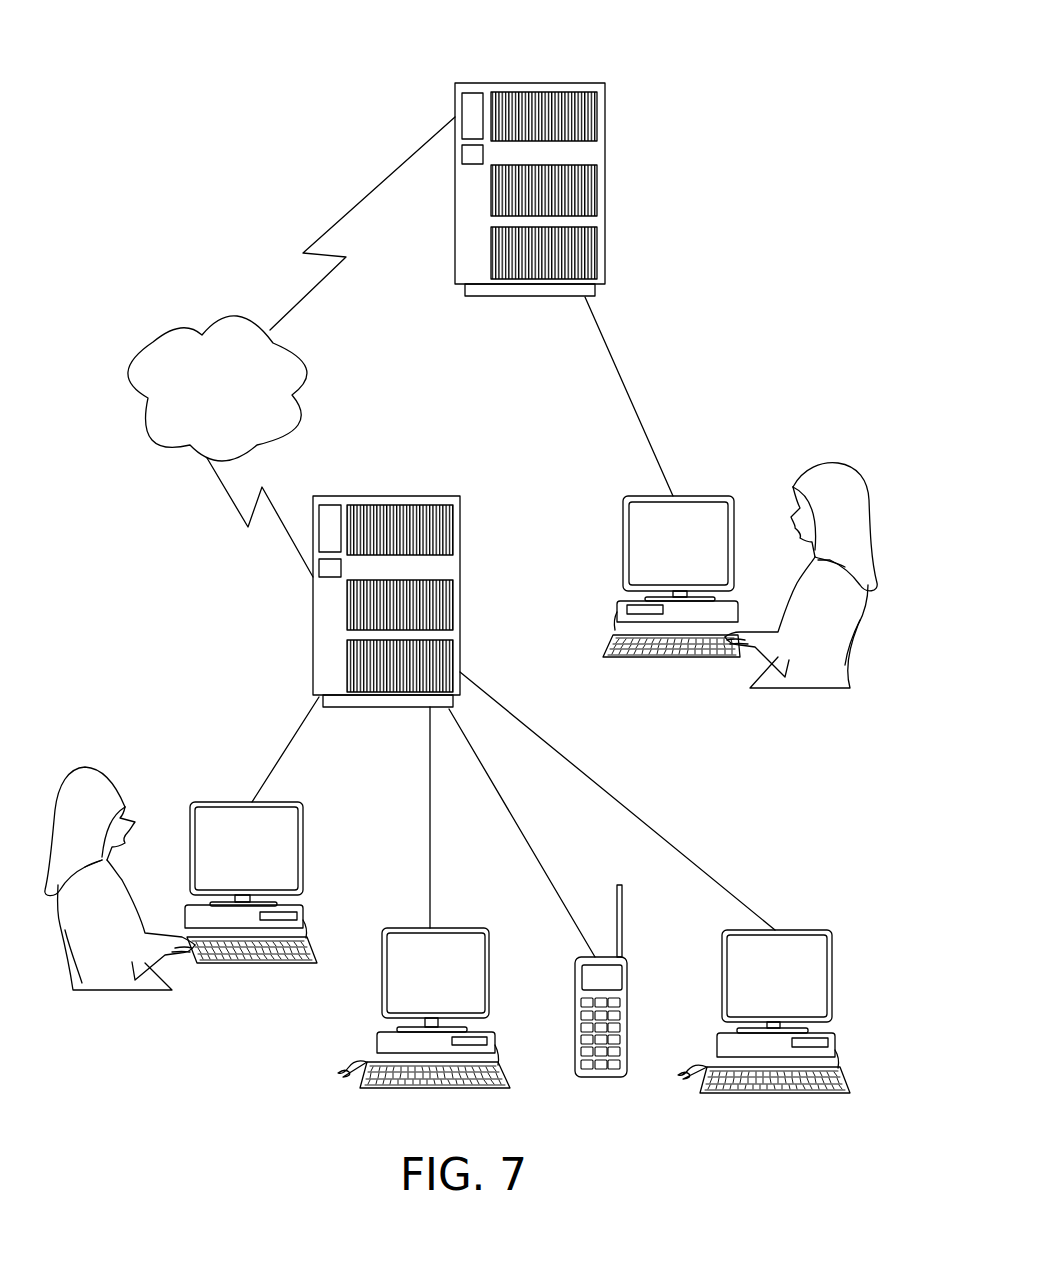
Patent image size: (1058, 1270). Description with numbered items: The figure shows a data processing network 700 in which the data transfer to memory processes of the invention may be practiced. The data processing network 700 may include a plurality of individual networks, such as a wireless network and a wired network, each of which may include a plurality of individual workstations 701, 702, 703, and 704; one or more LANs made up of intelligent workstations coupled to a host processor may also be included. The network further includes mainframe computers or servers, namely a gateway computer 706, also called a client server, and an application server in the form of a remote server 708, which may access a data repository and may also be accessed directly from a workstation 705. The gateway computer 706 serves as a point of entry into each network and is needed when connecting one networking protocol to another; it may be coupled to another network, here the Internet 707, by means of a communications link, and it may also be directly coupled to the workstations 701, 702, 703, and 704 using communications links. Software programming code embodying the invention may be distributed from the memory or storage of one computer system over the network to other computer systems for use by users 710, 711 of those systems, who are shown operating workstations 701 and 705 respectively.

The data processing network 700 is at (165, 578).
The workstation 701 is at (262, 862).
The workstation 702 is at (456, 993).
The workstation 703 is at (627, 1000).
The workstation 704 is at (795, 998).
The workstation 705 is at (700, 558).
The gateway computer 706 is at (460, 550).
The Internet 707 is at (173, 339).
The remote server 708 is at (605, 138).
The user 710 is at (98, 775).
The user 711 is at (835, 480).